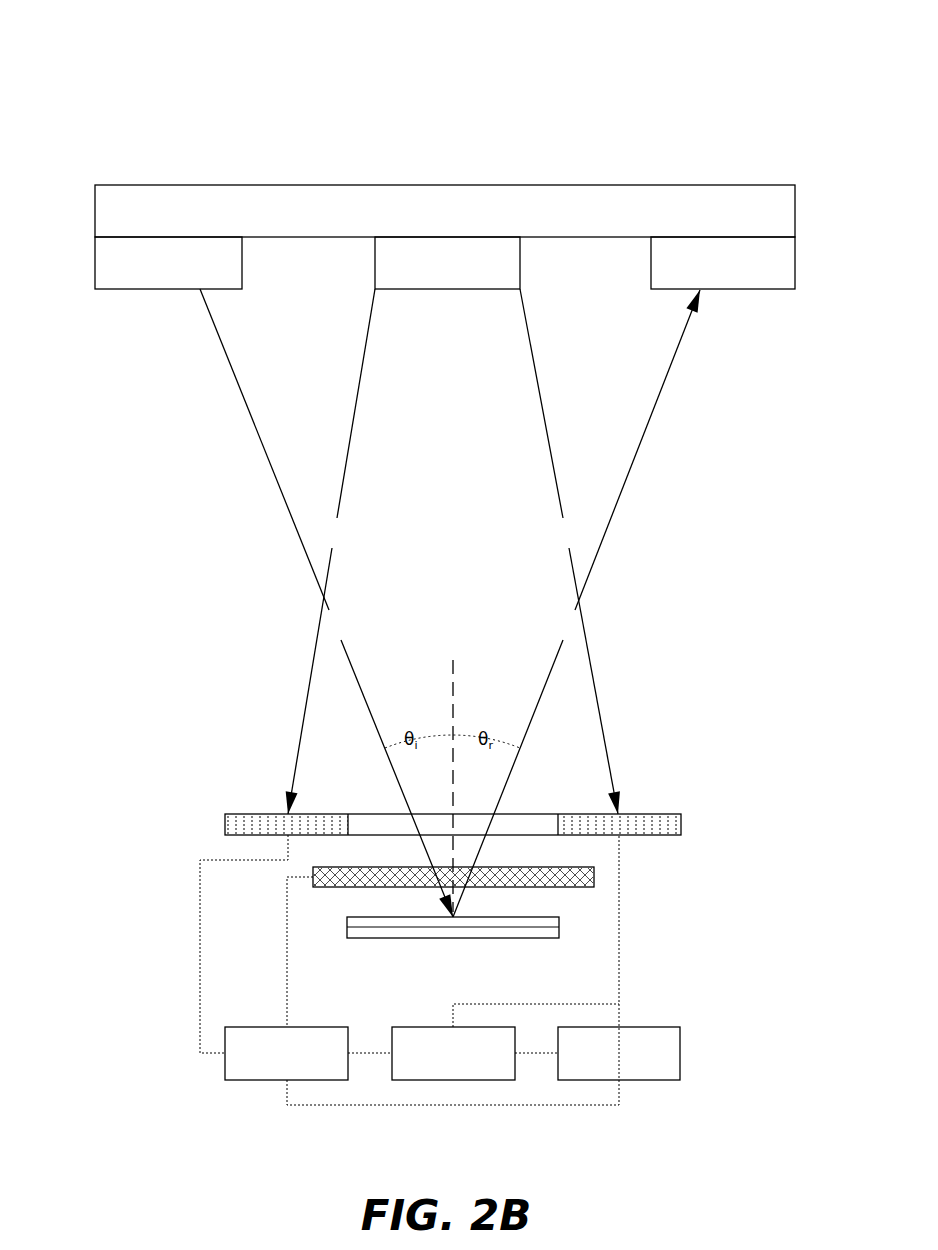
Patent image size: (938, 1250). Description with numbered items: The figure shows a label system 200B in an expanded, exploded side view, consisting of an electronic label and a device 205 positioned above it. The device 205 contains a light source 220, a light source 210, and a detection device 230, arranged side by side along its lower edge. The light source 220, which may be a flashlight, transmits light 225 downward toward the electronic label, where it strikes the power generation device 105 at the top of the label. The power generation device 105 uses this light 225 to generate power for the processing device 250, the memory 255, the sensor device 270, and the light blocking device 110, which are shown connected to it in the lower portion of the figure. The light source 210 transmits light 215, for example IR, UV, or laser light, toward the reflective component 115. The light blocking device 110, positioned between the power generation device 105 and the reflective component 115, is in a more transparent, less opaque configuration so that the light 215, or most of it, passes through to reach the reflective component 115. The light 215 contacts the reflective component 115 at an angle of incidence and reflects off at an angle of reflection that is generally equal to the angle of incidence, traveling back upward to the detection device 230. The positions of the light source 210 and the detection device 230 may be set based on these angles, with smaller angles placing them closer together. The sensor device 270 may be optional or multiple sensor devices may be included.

The label system 200B is at (128, 92).
The device 205 is at (445, 211).
The light source 210 is at (168, 263).
The light source 220 is at (447, 263).
The detection device 230 is at (723, 263).
The light 225 is at (453, 551).
The light 215 is at (450, 603).
The power generation device 105 is at (681, 825).
The light blocking device 110 is at (340, 887).
The reflective component 115 is at (480, 938).
The processing device 250 is at (286, 1053).
The memory 255 is at (453, 1053).
The sensor device 270 is at (619, 1053).